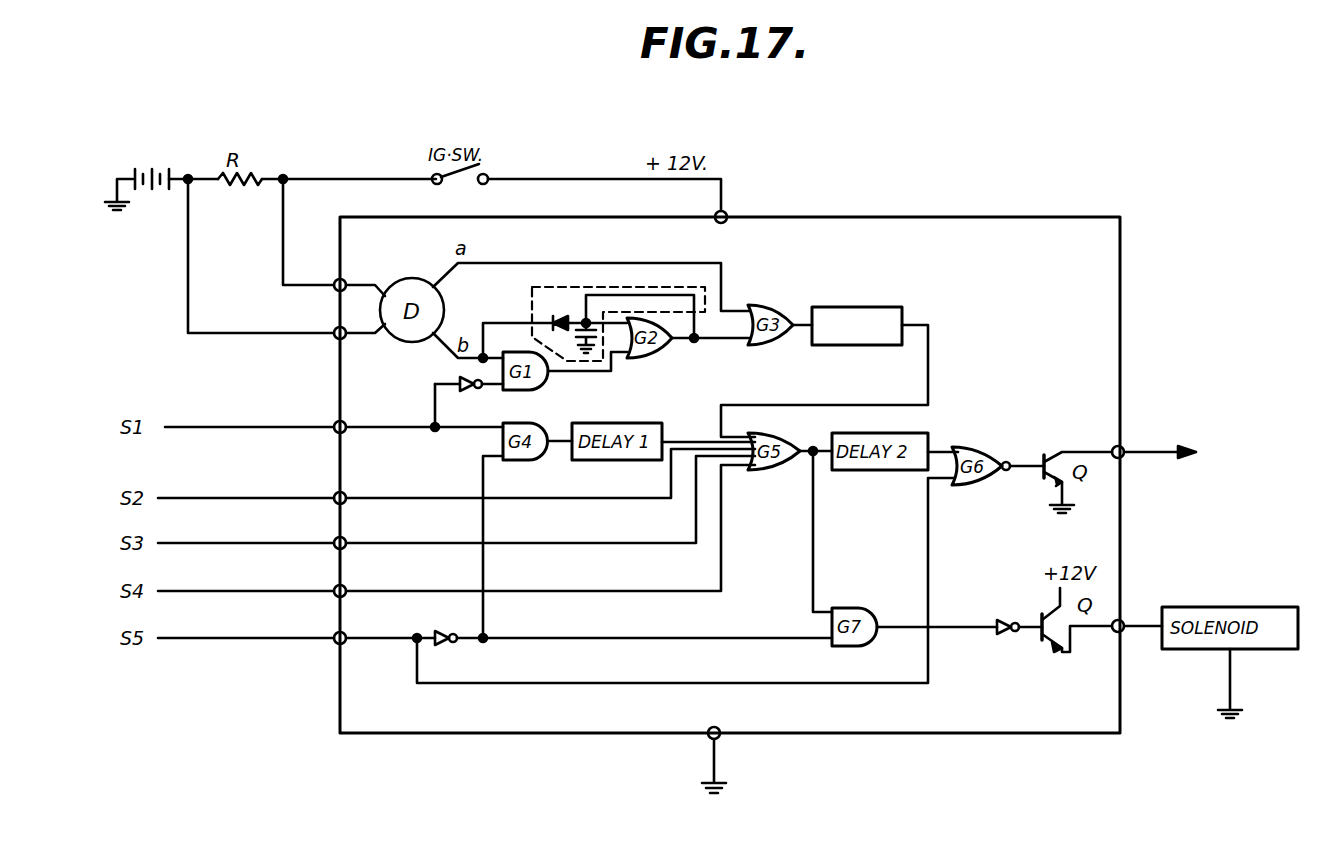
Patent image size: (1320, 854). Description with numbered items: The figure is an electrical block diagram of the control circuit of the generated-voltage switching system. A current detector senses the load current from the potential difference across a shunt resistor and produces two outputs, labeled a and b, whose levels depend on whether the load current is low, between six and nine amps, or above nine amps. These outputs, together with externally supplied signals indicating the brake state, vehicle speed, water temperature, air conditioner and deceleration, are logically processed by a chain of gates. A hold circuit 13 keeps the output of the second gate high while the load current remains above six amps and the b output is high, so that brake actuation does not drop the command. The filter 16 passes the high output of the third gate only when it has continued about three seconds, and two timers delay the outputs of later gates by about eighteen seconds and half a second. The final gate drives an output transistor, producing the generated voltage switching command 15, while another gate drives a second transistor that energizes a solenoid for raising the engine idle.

The hold circuit 13 is at (532, 300).
The generated voltage switching command 15 is at (1147, 450).
The filter 16 is at (885, 307).